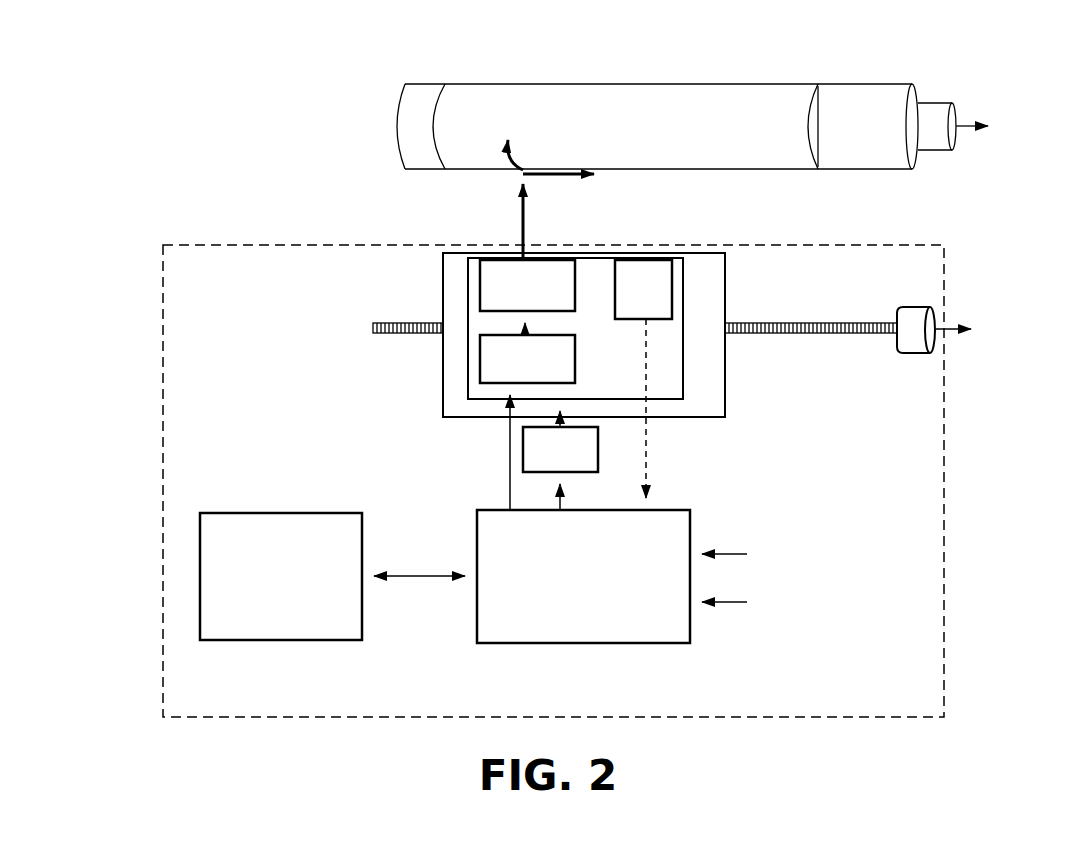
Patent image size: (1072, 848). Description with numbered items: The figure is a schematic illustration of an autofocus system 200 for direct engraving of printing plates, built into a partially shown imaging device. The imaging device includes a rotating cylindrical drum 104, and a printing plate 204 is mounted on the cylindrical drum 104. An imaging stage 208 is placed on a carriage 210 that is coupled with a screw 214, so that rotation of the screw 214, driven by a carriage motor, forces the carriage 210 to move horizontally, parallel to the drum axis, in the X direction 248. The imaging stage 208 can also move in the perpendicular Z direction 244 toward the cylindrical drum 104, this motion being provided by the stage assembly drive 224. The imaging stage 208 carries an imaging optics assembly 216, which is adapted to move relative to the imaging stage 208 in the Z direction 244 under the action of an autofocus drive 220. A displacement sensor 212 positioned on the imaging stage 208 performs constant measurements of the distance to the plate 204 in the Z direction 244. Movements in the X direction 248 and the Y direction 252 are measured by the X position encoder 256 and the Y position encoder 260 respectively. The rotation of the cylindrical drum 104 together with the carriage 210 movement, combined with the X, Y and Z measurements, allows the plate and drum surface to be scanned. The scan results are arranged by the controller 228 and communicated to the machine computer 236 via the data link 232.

The autofocus system 200 is at (292, 703).
The printing plate 204 is at (689, 90).
The cylindrical drum 104 is at (860, 90).
The Y position encoder 260 is at (934, 104).
The Y direction 252 is at (518, 150).
The X direction 248 is at (606, 177).
The Z direction 244 is at (520, 200).
The displacement sensor 212 is at (652, 266).
The imaging optics assembly 216 is at (468, 282).
The autofocus drive 220 is at (468, 353).
The imaging stage 208 is at (683, 372).
The carriage 210 is at (443, 401).
The screw 214 is at (772, 322).
The X position encoder 256 is at (916, 354).
The stage assembly drive 224 is at (575, 473).
The controller 228 is at (477, 520).
The data link 232 is at (430, 578).
The computer 236 is at (240, 513).